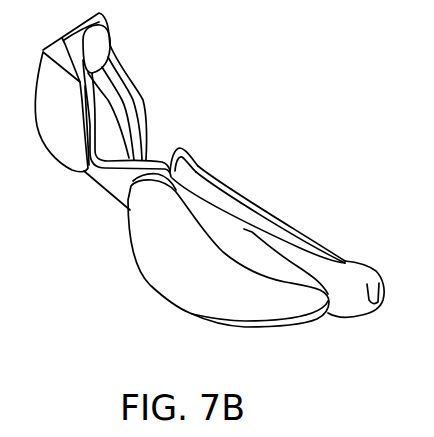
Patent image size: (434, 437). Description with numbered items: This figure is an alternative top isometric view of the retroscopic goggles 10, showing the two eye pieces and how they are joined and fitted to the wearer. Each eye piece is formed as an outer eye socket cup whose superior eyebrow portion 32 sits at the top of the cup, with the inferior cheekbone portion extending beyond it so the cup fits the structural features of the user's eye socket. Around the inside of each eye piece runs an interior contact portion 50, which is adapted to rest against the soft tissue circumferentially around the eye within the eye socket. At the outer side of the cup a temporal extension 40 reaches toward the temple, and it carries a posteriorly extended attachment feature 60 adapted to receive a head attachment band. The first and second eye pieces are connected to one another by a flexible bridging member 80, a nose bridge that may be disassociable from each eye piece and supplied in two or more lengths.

The goggles 10 is at (218, 188).
The superior eyebrow portion 32 is at (217, 226).
The temporal extension 40 is at (365, 289).
The interior contact portion 50 is at (128, 97).
The posteriorly extended attachment feature 60 is at (372, 273).
The flexible bridging member 80 is at (107, 183).